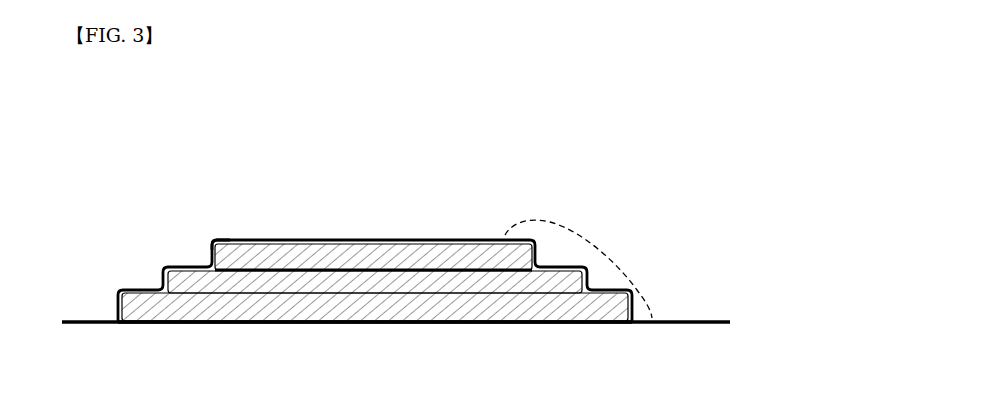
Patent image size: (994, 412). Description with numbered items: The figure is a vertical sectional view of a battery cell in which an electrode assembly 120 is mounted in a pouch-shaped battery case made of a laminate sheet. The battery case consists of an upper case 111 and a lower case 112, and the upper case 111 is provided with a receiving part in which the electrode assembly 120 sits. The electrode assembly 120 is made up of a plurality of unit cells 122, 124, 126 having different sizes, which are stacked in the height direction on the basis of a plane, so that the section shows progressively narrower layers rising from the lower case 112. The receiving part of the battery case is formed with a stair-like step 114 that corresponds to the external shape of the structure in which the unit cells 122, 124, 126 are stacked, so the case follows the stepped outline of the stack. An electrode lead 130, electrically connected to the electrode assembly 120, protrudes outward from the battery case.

The upper case 111 is at (222, 238).
The lower case 112 is at (163, 325).
The stair-like step 114 is at (562, 232).
The electrode assembly 120 is at (163, 275).
The unit cell 122 is at (303, 250).
The unit cell 124 is at (390, 283).
The unit cell 126 is at (463, 304).
The electrode lead 130 is at (730, 323).